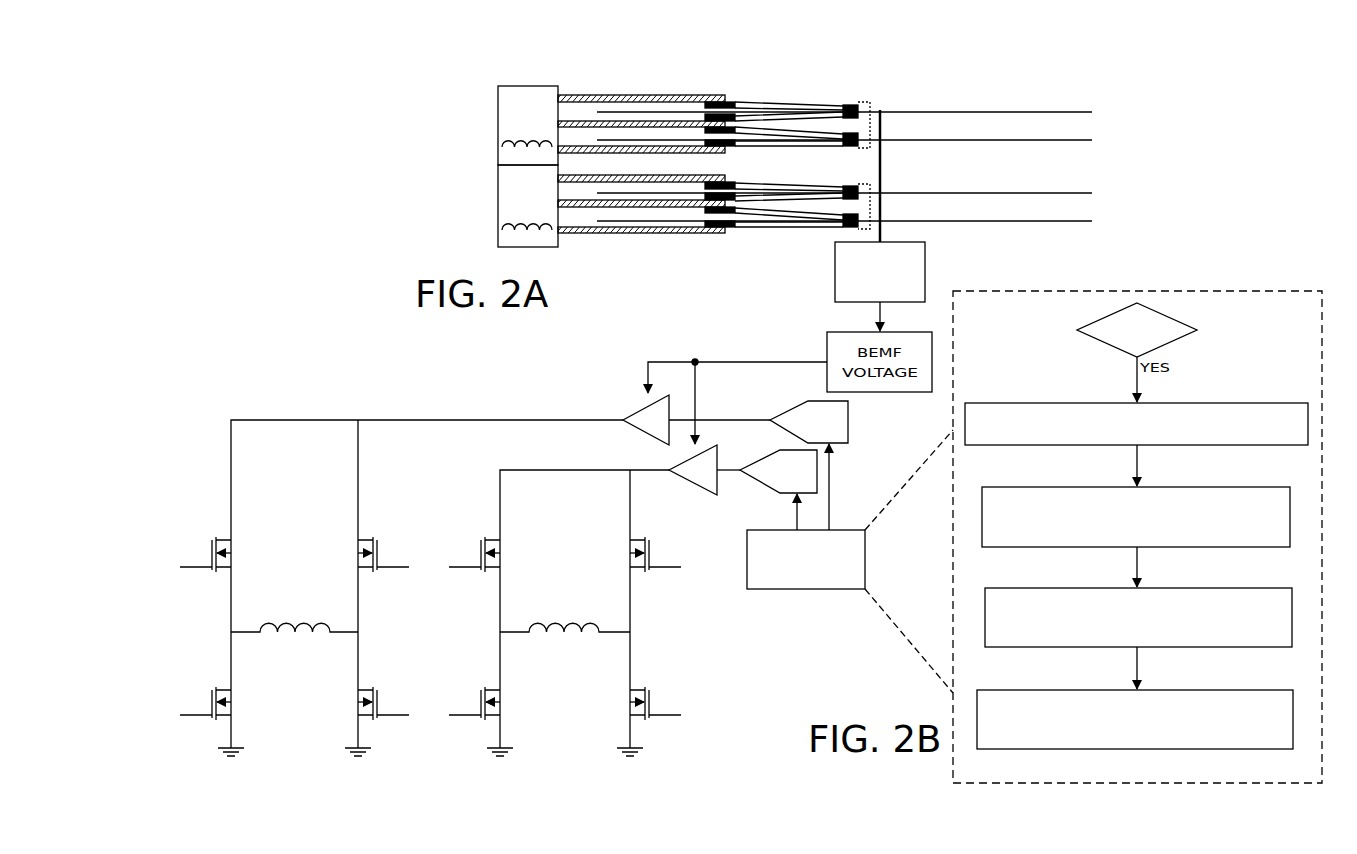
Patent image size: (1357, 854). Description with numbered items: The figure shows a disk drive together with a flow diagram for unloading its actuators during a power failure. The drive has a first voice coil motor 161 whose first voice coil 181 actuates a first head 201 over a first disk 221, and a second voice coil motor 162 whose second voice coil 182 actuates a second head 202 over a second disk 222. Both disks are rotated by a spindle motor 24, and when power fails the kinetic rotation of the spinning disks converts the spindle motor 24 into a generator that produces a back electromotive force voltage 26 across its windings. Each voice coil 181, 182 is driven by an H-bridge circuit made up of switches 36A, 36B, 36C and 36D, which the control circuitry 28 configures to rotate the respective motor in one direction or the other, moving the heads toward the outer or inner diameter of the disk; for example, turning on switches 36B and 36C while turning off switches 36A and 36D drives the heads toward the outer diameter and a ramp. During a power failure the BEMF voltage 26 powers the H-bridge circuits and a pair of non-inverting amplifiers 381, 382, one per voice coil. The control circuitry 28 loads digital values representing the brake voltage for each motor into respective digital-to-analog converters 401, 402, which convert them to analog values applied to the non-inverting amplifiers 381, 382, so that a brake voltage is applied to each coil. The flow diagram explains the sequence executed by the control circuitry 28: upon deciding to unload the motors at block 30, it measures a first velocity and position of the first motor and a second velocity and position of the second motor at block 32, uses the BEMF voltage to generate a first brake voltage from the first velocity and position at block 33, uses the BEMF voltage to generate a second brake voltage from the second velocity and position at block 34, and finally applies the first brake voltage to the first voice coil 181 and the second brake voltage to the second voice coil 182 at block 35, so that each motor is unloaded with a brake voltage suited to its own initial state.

In FIG. 2A, the first voice coil motor 161 is at (498, 91).
In FIG. 2A, the second voice coil motor 162 is at (498, 173).
In FIG. 2A, the first voice coil 181 is at (500, 143).
In FIG. 2A, the second voice coil 182 is at (500, 226).
In FIG. 2A, the first head 201 is at (850, 103).
In FIG. 2A, the second head 202 is at (850, 186).
In FIG. 2A, the first disk 221 is at (1086, 110).
In FIG. 2A, the second disk 222 is at (1083, 192).
In FIG. 2A, the spindle motor 24 is at (835, 272).
In FIG. 2A, the back electromotive force (BEMF) voltage 26 is at (758, 362).
In FIG. 2A, the control circuitry 28 is at (805, 590).
In FIG. 2B, the unload decision block 30 is at (1172, 345).
In FIG. 2B, the measure velocity and position block 32 is at (1275, 446).
In FIG. 2B, the first brake voltage generation block 33 is at (1248, 548).
In FIG. 2B, the second brake voltage generation block 34 is at (1248, 648).
In FIG. 2B, the apply brake voltages block 35 is at (1242, 750).
In FIG. 2A, the switch 36A is at (212, 535).
In FIG. 2A, the switch 36B is at (380, 535).
In FIG. 2A, the switch 36C is at (212, 683).
In FIG. 2A, the switch 36D is at (378, 683).
In FIG. 2A, the first non-inverting amplifier 381 is at (638, 400).
In FIG. 2A, the second non-inverting amplifier 382 is at (688, 496).
In FIG. 2A, the first digital-to-analog converter 401 is at (786, 410).
In FIG. 2A, the second digital-to-analog converter 402 is at (757, 494).